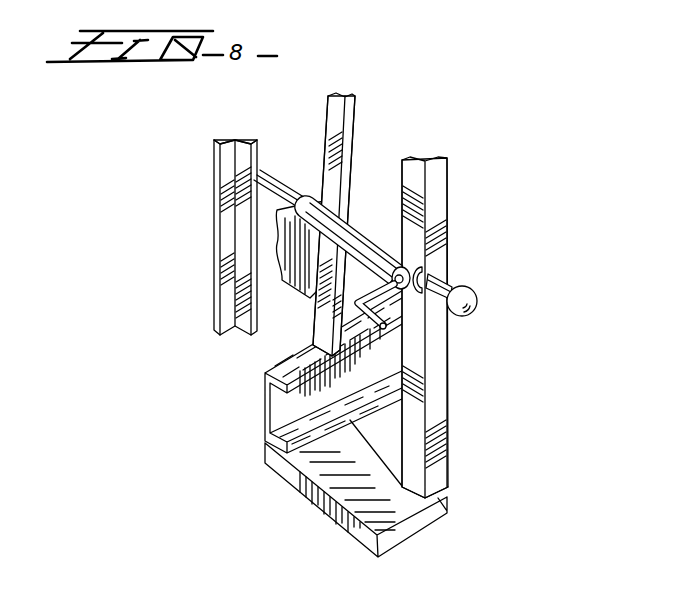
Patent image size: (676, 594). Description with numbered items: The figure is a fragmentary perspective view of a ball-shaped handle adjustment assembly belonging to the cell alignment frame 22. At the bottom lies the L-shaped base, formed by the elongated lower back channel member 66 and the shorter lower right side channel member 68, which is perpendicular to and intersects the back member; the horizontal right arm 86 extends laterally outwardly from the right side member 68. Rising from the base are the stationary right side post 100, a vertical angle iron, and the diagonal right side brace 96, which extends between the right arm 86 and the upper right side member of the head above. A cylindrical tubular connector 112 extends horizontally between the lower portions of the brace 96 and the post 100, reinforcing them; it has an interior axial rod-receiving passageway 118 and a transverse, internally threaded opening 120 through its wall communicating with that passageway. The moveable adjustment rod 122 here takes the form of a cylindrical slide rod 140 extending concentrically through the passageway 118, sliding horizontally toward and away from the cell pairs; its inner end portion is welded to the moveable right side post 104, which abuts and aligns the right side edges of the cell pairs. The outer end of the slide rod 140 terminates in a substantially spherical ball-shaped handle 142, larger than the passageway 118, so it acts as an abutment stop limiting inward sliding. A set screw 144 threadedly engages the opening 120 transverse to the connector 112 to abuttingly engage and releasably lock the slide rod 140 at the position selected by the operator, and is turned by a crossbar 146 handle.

The cell alignment frame 22 is at (244, 124).
The lower back channel member 66 is at (283, 281).
The lower right side channel member 68 is at (265, 417).
The horizontal right arm 86 is at (410, 520).
The right side brace 96 is at (448, 366).
The stationary right side post 100 is at (357, 98).
The moveable right side post 104 is at (214, 238).
The lower right side tubular connector 112 is at (358, 212).
The rod-receiving passageway 118 is at (422, 266).
The transverse internally threaded opening 120 is at (405, 290).
The moveable adjustment rod 122 is at (462, 277).
The cylindrical slide rod 140 is at (283, 178).
The ball-shaped handle 142 is at (475, 292).
The set screw 144 is at (366, 296).
The crossbar 146 is at (381, 330).